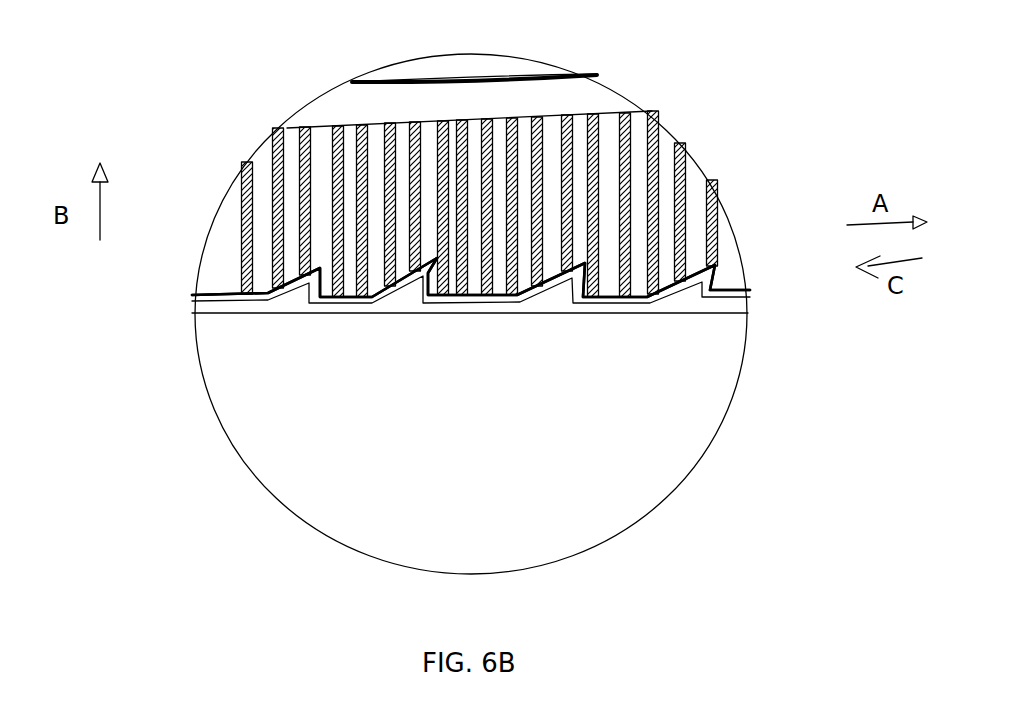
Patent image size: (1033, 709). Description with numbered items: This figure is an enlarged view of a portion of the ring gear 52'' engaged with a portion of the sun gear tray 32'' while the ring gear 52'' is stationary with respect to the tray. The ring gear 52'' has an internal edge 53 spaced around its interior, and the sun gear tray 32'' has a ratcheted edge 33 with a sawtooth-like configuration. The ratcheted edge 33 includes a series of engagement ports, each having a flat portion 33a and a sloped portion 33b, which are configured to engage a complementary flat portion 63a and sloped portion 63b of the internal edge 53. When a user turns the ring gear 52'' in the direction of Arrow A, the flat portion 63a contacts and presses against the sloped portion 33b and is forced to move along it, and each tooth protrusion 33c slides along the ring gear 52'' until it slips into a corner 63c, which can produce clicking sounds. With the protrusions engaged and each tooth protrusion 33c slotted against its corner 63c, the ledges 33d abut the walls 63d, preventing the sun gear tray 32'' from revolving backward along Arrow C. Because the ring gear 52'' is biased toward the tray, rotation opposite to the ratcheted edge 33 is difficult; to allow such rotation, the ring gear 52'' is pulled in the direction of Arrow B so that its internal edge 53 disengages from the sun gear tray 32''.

The ring gear 52'' is at (539, 67).
The flat portion 63a is at (242, 270).
The sloped portion 63b is at (405, 285).
The corner 63c is at (468, 270).
The wall 63d is at (586, 268).
The internal edge 53 is at (197, 300).
The flat portion 33a is at (242, 315).
The sloped portion 33b is at (297, 302).
The tooth protrusion 33c is at (423, 300).
The ledge 33d is at (567, 300).
The ratcheted edge 33 is at (752, 302).
The sun gear tray 32'' is at (500, 359).